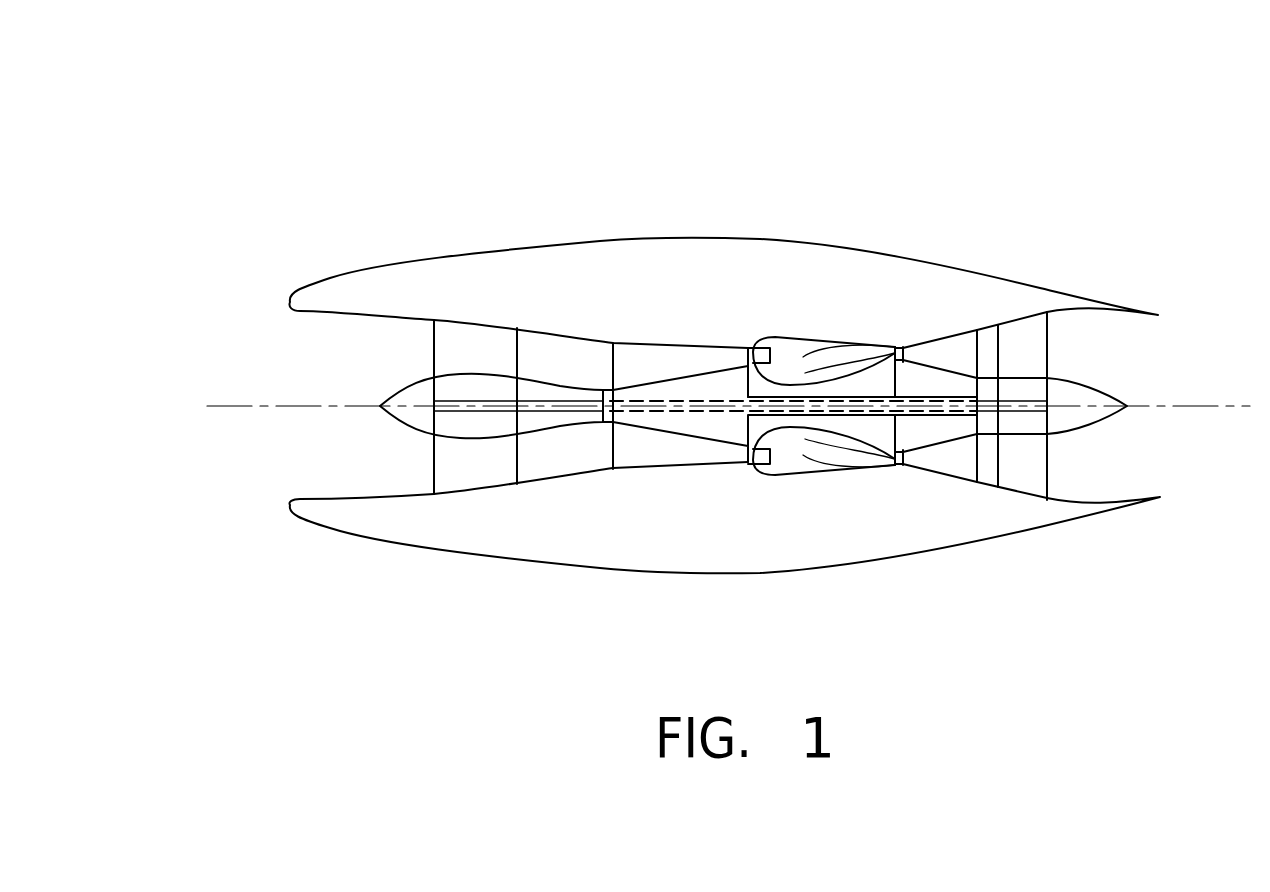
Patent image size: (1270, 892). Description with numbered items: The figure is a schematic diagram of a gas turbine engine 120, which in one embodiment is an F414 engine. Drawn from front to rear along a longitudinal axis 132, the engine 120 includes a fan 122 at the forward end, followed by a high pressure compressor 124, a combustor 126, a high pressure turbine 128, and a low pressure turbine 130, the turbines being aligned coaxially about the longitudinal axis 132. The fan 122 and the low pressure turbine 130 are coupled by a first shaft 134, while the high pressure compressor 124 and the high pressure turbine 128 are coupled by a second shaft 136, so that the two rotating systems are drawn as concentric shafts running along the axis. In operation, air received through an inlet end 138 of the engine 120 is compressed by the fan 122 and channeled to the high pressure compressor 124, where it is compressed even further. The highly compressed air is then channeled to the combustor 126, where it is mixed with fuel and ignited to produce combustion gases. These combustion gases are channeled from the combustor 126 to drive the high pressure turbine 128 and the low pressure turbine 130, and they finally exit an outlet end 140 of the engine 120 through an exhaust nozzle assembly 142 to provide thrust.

The gas turbine engine 120 is at (452, 175).
The fan 122 is at (465, 357).
The high pressure compressor 124 is at (663, 370).
The combustor 126 is at (848, 455).
The high pressure turbine 128 is at (940, 350).
The low pressure turbine 130 is at (1012, 347).
The longitudinal axis 132 is at (295, 405).
The first shaft 134 is at (572, 410).
The second shaft 136 is at (785, 415).
The inlet end 138 is at (280, 481).
The outlet end 140 is at (1182, 357).
The exhaust nozzle assembly 142 is at (1087, 505).